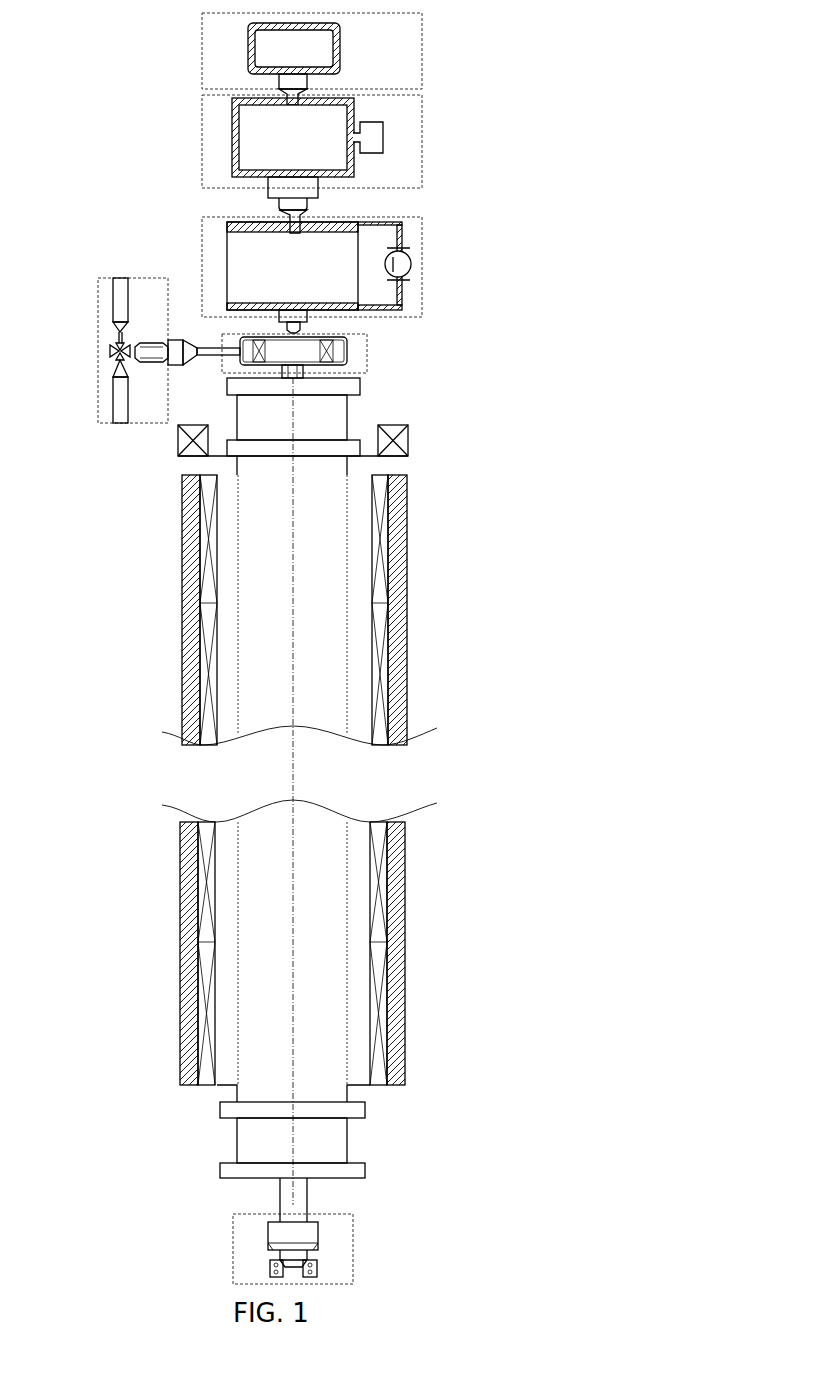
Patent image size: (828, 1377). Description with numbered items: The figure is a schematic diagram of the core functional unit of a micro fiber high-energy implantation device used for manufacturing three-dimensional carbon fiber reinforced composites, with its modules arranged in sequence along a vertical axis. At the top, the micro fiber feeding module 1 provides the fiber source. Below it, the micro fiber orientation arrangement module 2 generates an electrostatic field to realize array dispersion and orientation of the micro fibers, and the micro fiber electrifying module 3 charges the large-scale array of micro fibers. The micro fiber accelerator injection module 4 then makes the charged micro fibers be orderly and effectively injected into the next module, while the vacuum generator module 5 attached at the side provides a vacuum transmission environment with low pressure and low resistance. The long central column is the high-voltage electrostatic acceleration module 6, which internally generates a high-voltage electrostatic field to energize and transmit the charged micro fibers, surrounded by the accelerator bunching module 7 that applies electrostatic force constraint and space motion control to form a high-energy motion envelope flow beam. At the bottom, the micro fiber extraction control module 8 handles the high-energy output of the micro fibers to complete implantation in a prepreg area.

The micro fiber feeding module 1 is at (422, 67).
The micro fiber orientation arrangement module 2 is at (422, 142).
The micro fiber electrifying module 3 is at (422, 267).
The micro fiber accelerator injection module 4 is at (367, 363).
The vacuum generator module 5 is at (98, 313).
The high-voltage electrostatic acceleration module 6 is at (347, 602).
The accelerator bunching module 7 is at (403, 672).
The micro fiber extraction control module 8 is at (353, 1248).